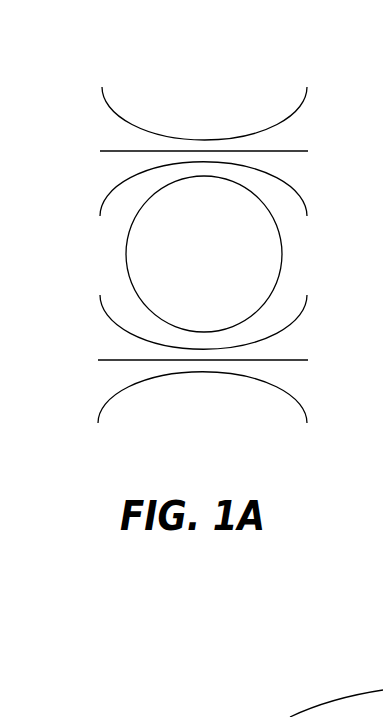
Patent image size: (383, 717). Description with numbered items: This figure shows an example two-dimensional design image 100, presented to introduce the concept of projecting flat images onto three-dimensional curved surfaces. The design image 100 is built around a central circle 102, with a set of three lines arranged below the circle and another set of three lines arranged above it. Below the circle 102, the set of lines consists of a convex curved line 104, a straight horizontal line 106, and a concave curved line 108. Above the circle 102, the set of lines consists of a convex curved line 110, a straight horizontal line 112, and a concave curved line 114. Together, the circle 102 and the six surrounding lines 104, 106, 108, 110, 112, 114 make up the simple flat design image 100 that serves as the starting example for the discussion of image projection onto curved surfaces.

The 2-D design image 100 is at (195, 115).
The circle 102 is at (126, 254).
The convex curved line 104 is at (106, 407).
The straight horizontal line 106 is at (108, 360).
The concave curved line 108 is at (103, 313).
The convex curved line 110 is at (108, 196).
The straight horizontal line 112 is at (105, 150).
The concave curved line 114 is at (102, 94).